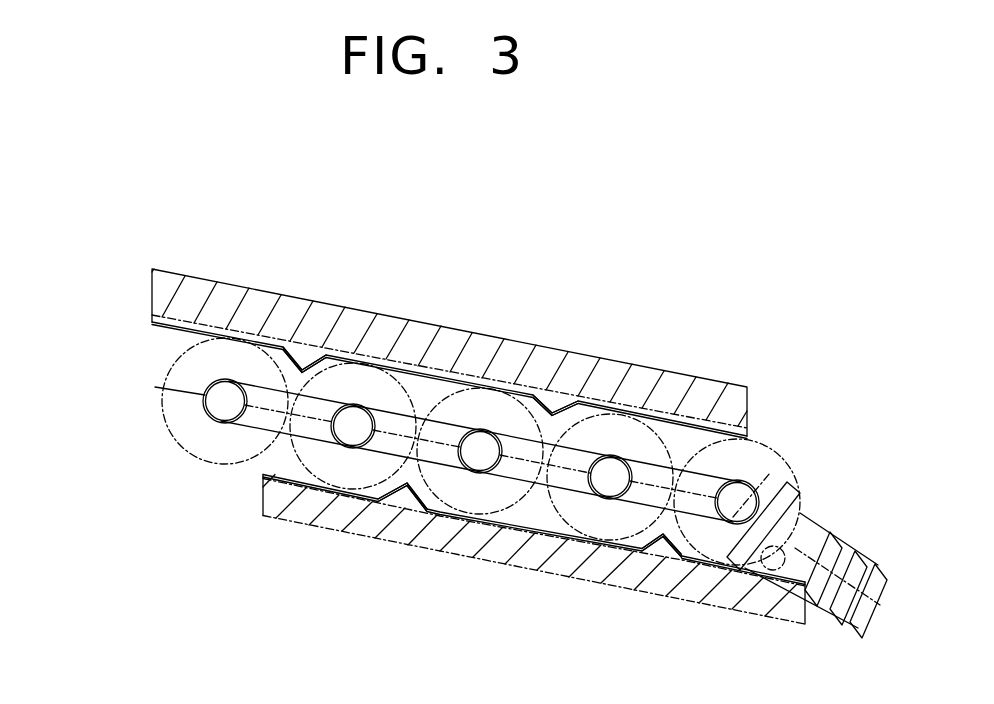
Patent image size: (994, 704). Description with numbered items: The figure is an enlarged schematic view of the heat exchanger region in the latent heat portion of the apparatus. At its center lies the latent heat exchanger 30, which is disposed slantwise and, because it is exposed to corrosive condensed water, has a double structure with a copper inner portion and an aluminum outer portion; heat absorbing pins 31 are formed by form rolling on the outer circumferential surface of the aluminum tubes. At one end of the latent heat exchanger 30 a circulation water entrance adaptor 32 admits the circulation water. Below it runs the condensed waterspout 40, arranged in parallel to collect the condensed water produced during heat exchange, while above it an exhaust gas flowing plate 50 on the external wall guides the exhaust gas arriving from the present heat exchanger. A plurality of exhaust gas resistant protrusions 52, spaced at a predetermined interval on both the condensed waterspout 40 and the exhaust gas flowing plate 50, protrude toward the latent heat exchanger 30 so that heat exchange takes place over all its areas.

The latent heat exchanger 30 is at (464, 375).
The heat absorbing pins 31 is at (238, 348).
The circulation water entrance adaptor 32 is at (823, 526).
The condensed waterspout 40 is at (298, 500).
The exhaust gas flowing plate 50 is at (192, 300).
The exhaust gas resistant protrusions 52 is at (292, 376).